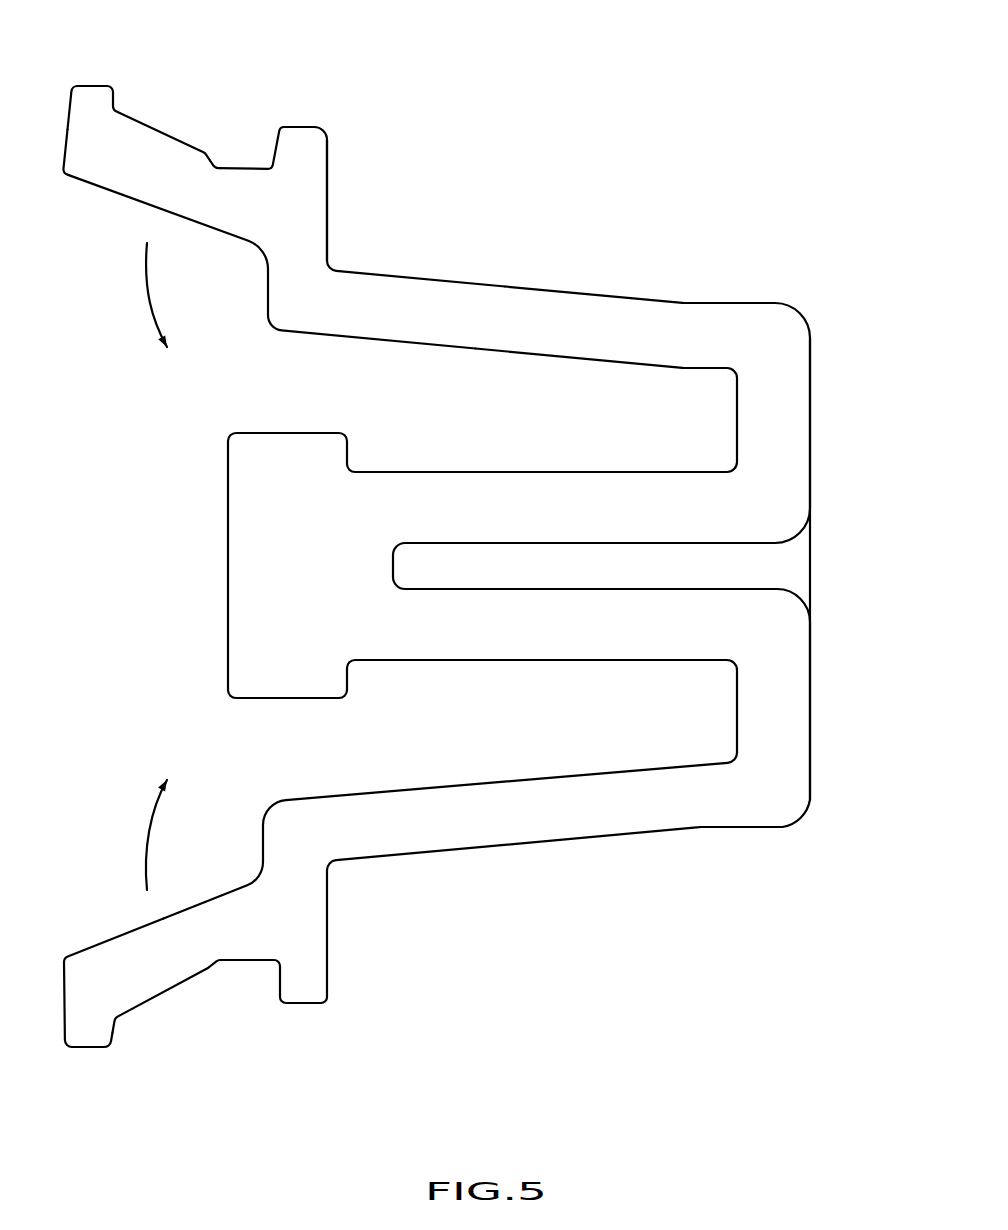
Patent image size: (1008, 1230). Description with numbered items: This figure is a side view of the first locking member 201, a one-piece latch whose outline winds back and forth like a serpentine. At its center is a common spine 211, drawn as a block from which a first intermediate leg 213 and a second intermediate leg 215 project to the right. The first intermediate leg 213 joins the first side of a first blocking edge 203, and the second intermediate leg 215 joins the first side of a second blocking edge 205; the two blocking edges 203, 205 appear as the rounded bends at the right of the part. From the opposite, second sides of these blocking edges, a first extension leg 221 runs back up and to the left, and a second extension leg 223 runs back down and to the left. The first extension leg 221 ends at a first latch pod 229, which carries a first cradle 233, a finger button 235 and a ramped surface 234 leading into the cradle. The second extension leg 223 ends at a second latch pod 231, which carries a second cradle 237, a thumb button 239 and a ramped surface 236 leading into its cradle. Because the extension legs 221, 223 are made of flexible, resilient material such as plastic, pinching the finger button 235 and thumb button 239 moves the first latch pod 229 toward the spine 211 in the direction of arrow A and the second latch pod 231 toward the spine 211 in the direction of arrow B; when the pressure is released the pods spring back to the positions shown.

The first locking member 201 is at (627, 233).
The first blocking edge 203 is at (811, 398).
The second blocking edge 205 is at (814, 704).
The spine 211 is at (269, 578).
The first intermediate leg 213 is at (522, 520).
The second intermediate leg 215 is at (554, 640).
The first extension leg 221 is at (514, 333).
The second extension leg 223 is at (566, 811).
The first latch pod 229 is at (347, 148).
The second latch pod 231 is at (363, 984).
The first cradle 233 is at (247, 167).
The ramped surface 234 is at (323, 137).
The finger button 235 is at (97, 87).
The ramped surface 236 is at (327, 993).
The second cradle 237 is at (237, 967).
The thumb button 239 is at (97, 1047).
The arrow A is at (147, 293).
The arrow B is at (145, 838).